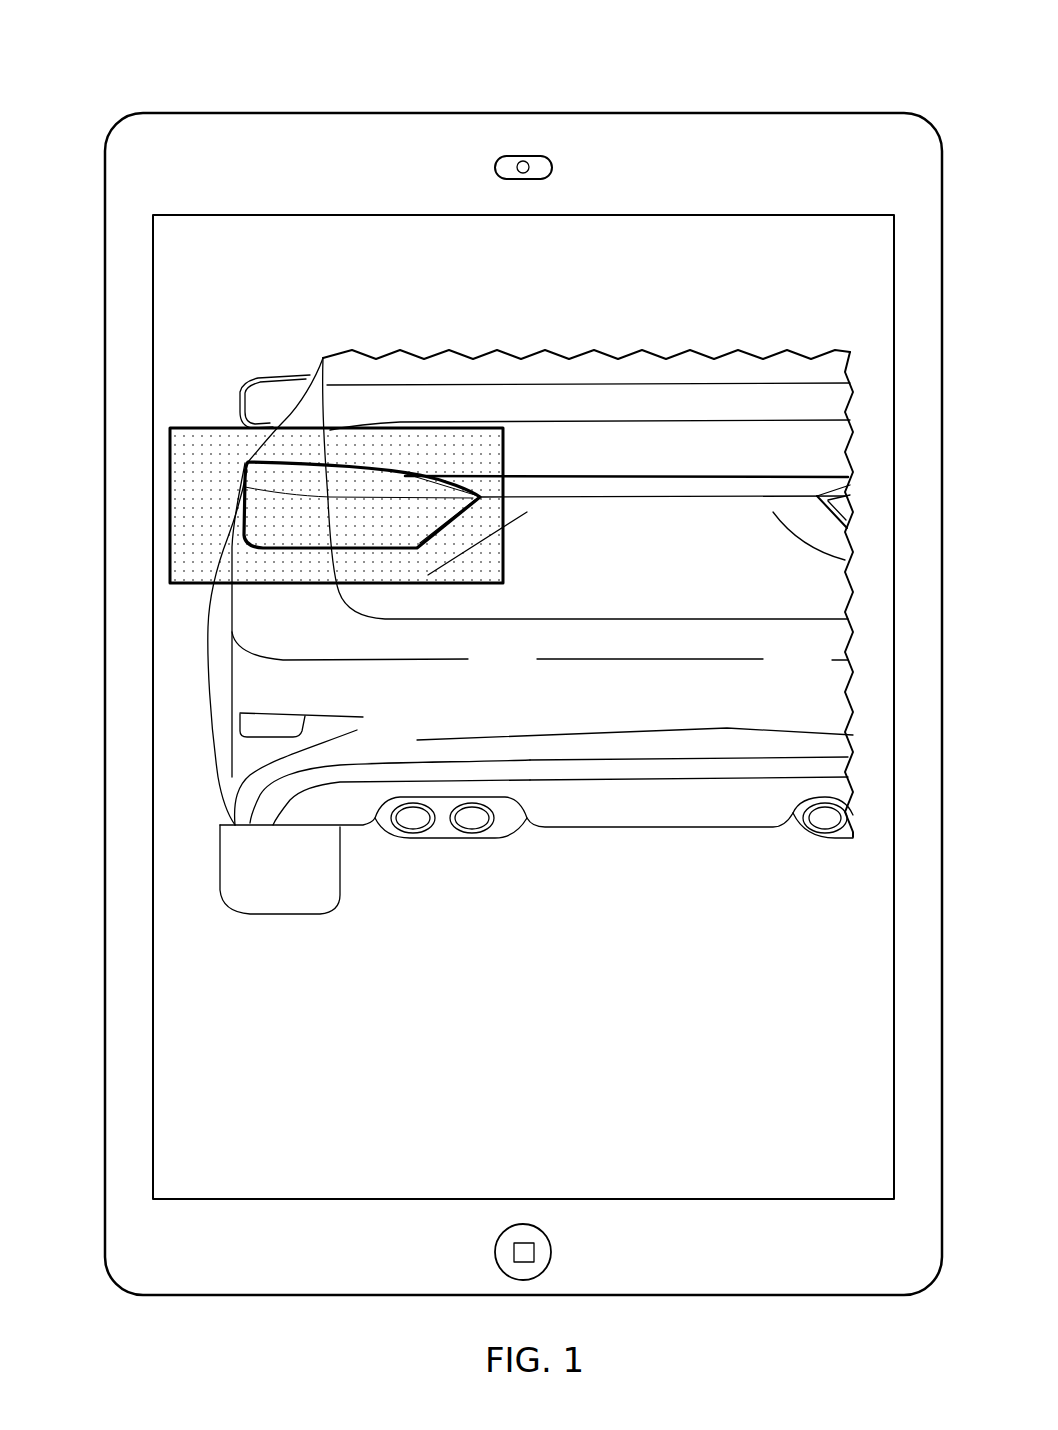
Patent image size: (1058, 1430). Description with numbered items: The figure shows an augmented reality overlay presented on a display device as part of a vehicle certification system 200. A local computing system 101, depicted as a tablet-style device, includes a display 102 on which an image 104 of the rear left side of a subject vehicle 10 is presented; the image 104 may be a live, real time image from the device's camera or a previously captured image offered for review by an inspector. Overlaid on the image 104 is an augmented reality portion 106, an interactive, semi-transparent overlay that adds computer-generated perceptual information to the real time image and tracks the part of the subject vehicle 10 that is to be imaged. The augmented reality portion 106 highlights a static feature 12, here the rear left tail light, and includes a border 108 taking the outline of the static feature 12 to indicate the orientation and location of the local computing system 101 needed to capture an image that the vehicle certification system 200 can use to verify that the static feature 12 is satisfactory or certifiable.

The vehicle certification system 200 is at (502, 647).
The local computing system 101 is at (523, 647).
The display 102 is at (193, 215).
The image 104 is at (588, 550).
The augmented reality portion 106 is at (193, 428).
The border 108 is at (463, 485).
The static feature 12 is at (258, 475).
The subject vehicle 10 is at (694, 707).